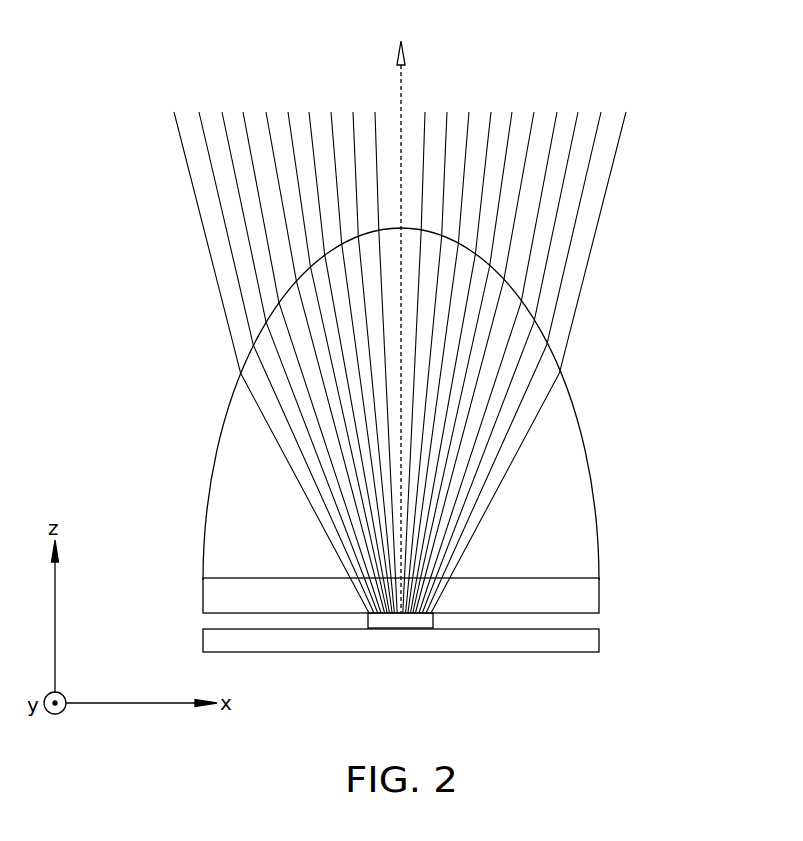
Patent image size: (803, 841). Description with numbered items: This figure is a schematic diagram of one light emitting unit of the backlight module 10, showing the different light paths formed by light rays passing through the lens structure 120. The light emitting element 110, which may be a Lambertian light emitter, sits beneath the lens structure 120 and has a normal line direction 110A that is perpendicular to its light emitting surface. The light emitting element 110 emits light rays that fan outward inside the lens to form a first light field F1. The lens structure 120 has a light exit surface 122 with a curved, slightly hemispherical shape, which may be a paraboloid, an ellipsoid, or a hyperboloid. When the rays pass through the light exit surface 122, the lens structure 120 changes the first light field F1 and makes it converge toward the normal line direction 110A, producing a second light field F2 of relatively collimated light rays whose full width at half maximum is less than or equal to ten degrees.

The backlight module 10 is at (146, 171).
The light emitting element 110 is at (409, 622).
The normal line direction 110A is at (401, 311).
The lens structure 120 is at (205, 308).
The light exit surface 122 is at (512, 290).
The first light field F1 is at (548, 492).
The second light field F2 is at (626, 177).